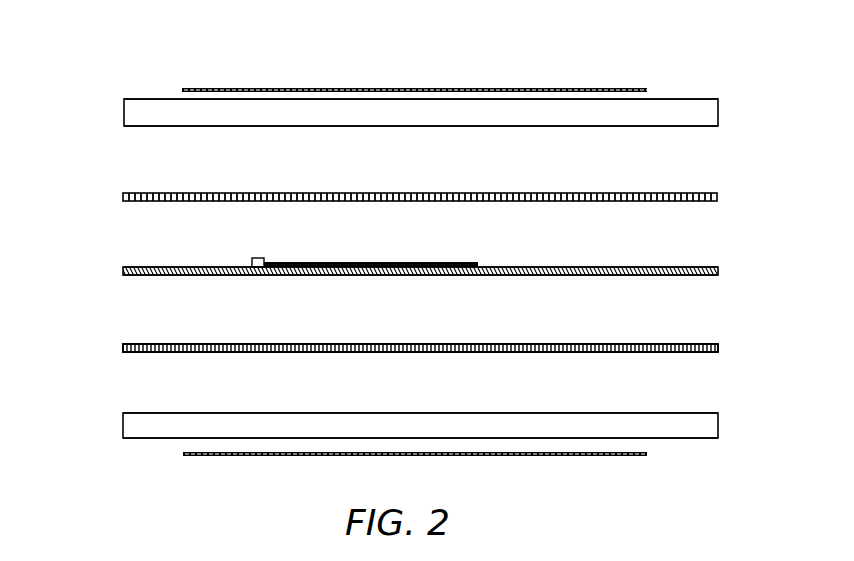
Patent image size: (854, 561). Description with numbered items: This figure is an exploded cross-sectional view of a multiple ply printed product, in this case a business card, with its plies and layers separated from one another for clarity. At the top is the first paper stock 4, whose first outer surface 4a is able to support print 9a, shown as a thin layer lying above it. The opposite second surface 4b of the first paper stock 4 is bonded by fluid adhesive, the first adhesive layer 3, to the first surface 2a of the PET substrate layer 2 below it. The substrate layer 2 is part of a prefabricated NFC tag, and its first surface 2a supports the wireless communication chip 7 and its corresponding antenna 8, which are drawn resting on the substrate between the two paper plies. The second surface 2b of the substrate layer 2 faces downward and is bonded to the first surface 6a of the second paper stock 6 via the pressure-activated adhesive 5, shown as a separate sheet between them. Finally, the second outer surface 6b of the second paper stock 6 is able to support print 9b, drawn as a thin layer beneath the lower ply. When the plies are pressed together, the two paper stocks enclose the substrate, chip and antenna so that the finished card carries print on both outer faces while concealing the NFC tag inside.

The substrate layer 2 is at (131, 273).
The first surface of the substrate layer 2a is at (178, 266).
The second surface of the substrate layer 2b is at (166, 277).
The first adhesive layer 3 is at (717, 197).
The first paper stock 4 is at (126, 110).
The first outer surface 4a is at (167, 98).
The second surface 4b is at (161, 128).
The pressure-activated adhesive 5 is at (718, 348).
The second paper stock 6 is at (137, 423).
The first surface of the second paper stock 6a is at (178, 412).
The second outer surface 6b is at (172, 440).
The wireless communication chip 7 is at (257, 258).
The antenna 8 is at (360, 262).
The print 9a is at (196, 88).
The print 9b is at (205, 457).